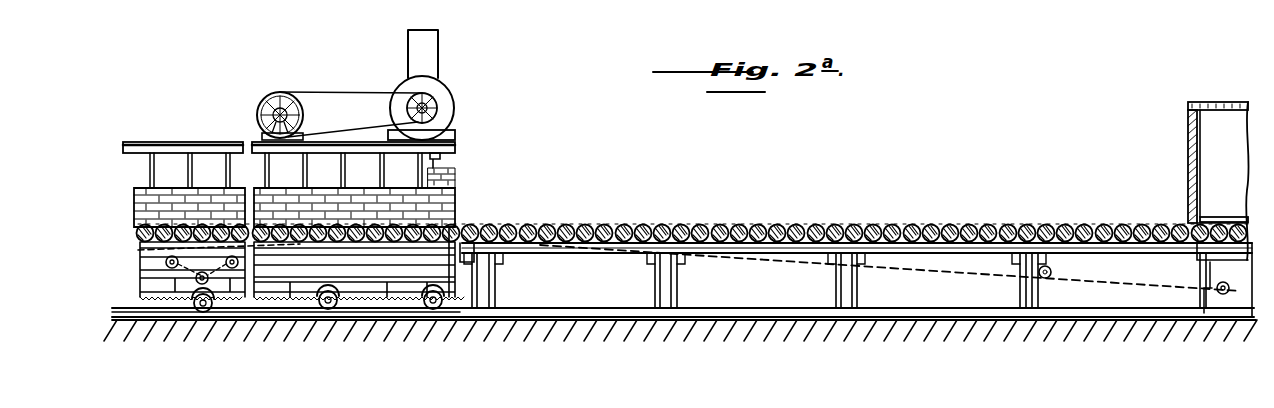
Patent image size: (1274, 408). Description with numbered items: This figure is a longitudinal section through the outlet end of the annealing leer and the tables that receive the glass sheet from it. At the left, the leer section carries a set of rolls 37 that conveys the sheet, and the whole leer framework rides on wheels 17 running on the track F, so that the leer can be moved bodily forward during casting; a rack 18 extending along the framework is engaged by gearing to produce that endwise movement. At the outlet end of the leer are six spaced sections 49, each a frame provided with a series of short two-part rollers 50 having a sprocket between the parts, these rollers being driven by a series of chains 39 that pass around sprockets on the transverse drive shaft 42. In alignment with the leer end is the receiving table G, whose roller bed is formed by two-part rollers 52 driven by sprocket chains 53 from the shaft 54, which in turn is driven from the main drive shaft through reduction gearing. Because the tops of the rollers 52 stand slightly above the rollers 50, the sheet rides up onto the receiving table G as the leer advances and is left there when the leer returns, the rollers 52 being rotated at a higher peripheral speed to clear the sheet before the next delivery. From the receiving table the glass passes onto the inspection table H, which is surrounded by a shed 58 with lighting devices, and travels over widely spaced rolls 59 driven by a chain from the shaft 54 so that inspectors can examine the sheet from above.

The set of rolls 37 is at (355, 221).
The spaced section 49 is at (438, 214).
The short roller 50 is at (455, 215).
The two part roller 52 is at (587, 225).
The receiving table G is at (852, 226).
The sprocket chain 53 is at (950, 277).
The shed 58 is at (1203, 130).
The roll 59 is at (1212, 226).
The inspection table H is at (1197, 165).
The shaft 54 is at (1226, 296).
The transverse drive shaft 42 is at (200, 286).
The chain 39 is at (208, 266).
The track F is at (345, 305).
The rack 18 is at (433, 309).
The wheel 17 is at (440, 313).